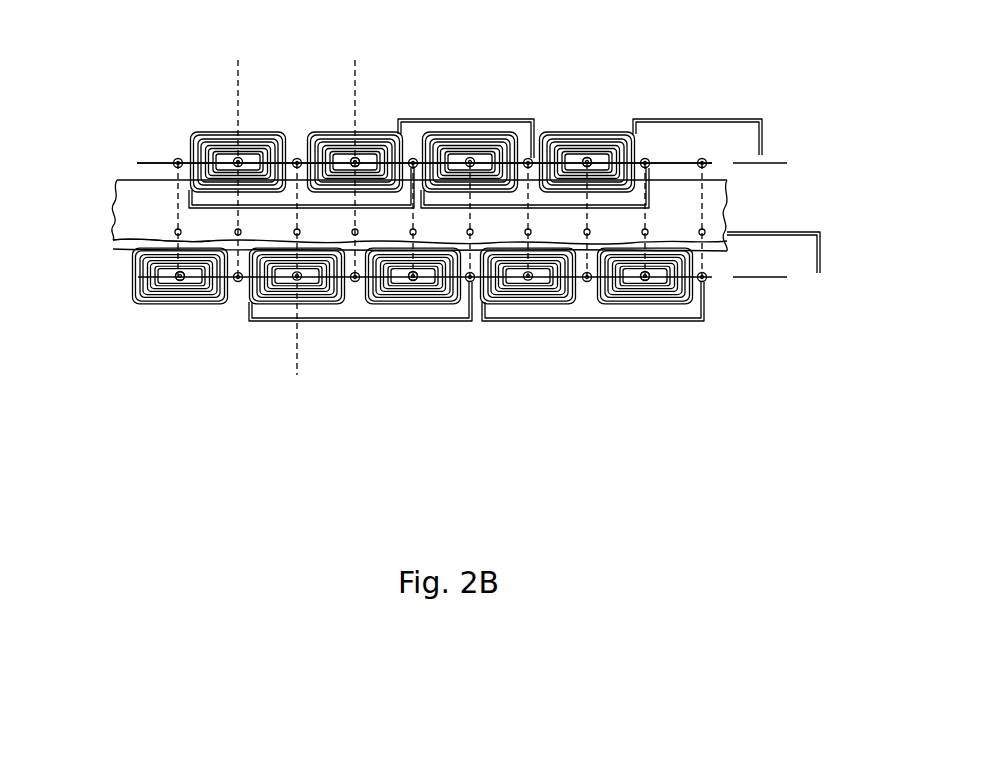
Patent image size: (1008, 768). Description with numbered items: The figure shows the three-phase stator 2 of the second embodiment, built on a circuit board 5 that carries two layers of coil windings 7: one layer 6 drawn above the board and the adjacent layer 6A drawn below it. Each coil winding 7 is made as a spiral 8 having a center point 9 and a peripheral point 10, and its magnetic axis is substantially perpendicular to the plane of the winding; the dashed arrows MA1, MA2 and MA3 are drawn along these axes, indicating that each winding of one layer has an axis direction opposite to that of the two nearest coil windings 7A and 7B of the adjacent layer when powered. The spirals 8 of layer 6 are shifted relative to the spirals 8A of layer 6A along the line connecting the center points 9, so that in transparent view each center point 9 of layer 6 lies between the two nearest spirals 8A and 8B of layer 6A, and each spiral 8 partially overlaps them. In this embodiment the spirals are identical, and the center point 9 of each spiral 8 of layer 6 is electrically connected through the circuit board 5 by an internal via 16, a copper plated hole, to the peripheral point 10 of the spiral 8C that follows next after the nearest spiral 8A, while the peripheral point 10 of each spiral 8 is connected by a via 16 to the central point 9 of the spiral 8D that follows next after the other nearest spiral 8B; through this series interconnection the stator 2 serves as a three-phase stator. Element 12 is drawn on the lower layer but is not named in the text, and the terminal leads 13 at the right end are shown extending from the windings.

The stator 2 is at (821, 189).
The circuit board 5 is at (135, 198).
The layer 6 is at (197, 133).
The adjacent layer 6A is at (680, 302).
The coil winding 7 is at (492, 148).
The coil winding 7A is at (382, 130).
The coil winding 7B is at (272, 135).
The spiral 8 is at (400, 148).
The spiral 8A is at (270, 292).
The spiral 8B is at (423, 302).
The spiral 8C is at (133, 302).
The spiral 8D is at (553, 300).
The center point 9 is at (352, 158).
The peripheral point 10 is at (440, 143).
The coil conductor 12 is at (215, 295).
The terminal lead 13 is at (775, 160).
The internal via 16 is at (115, 237).
The magnetization axis 1 MA1 is at (297, 375).
The magnetization axis 2 MA2 is at (355, 60).
The magnetization axis 3 MA3 is at (238, 60).